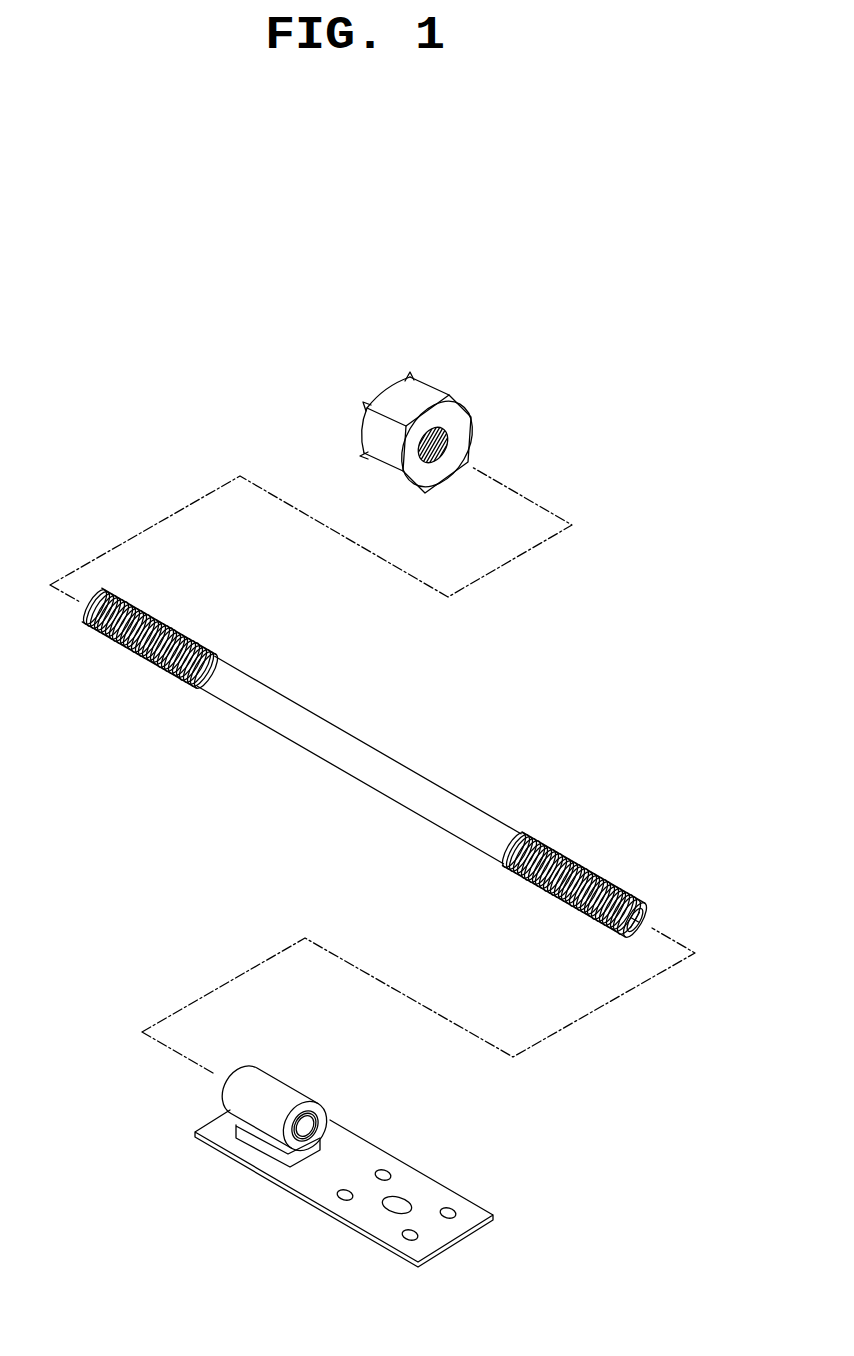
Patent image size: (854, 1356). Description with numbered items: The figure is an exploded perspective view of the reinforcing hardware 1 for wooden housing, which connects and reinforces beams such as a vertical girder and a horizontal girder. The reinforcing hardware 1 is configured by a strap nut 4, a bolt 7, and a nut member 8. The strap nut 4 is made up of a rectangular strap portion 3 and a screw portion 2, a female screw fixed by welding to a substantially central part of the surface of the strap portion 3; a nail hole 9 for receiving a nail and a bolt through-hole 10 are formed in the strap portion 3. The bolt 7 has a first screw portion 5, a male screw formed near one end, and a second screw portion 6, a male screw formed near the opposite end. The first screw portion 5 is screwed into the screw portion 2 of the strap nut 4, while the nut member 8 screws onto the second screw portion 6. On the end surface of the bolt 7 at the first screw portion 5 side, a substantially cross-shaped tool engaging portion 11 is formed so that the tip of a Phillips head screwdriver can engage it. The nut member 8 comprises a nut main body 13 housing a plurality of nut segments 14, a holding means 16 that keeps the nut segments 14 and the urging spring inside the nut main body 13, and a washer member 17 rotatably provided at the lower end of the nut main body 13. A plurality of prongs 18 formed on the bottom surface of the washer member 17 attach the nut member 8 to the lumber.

The reinforcing hardware for wooden housing 1 is at (648, 338).
The screw portion 2 is at (240, 1105).
The strap portion 3 is at (290, 1190).
The strap nut 4 is at (457, 1188).
The first screw portion 5 is at (587, 862).
The second screw portion 6 is at (157, 615).
The bolt 7 is at (442, 780).
The nut member 8 is at (442, 376).
The nail hole 9 is at (346, 1192).
The bolt through-hole 10 is at (397, 1203).
The tool engaging portion 11 is at (650, 912).
The nut main body 13 is at (473, 418).
The nut segment 14 is at (452, 438).
The holding means 16 is at (470, 432).
The washer member 17 is at (368, 428).
The prong 18 is at (408, 377).